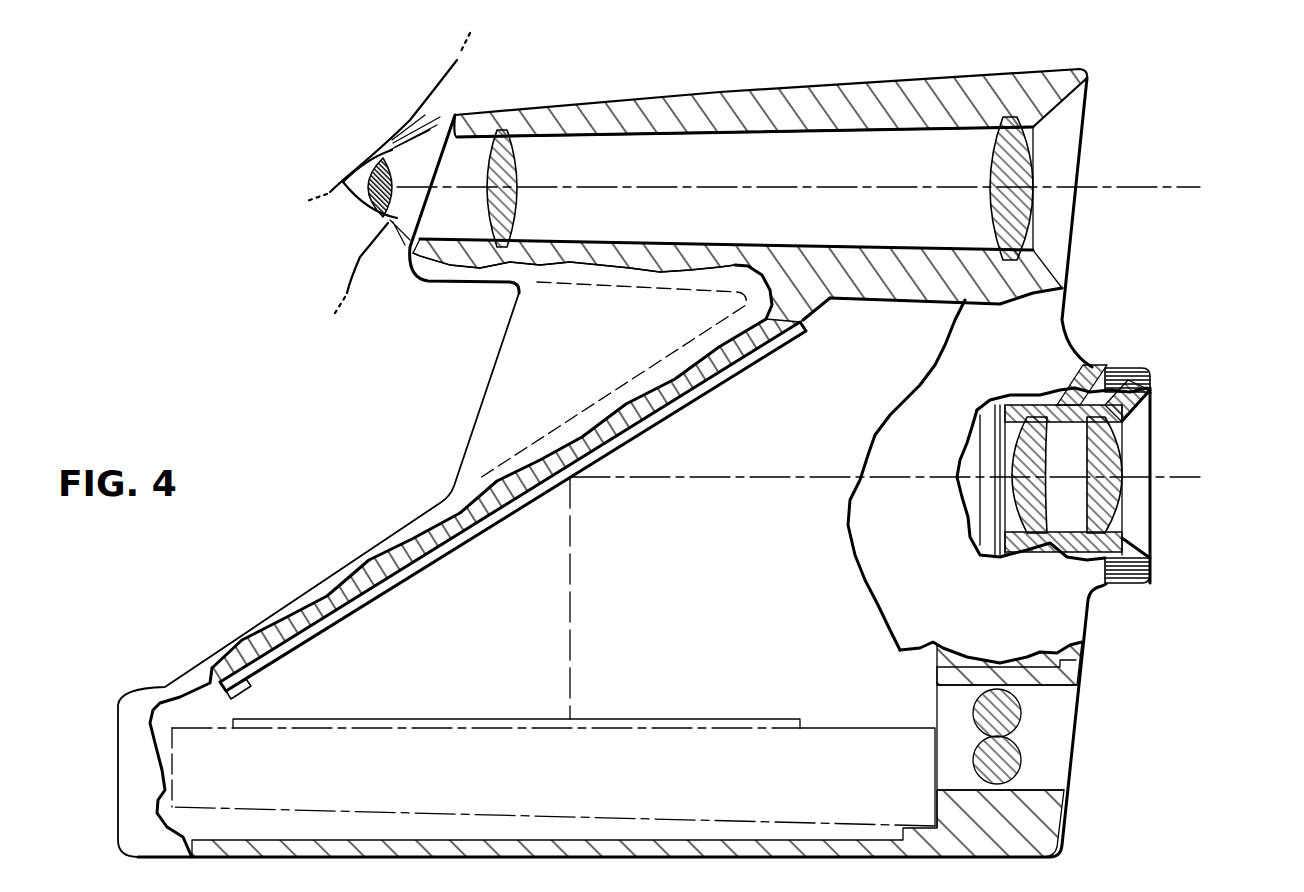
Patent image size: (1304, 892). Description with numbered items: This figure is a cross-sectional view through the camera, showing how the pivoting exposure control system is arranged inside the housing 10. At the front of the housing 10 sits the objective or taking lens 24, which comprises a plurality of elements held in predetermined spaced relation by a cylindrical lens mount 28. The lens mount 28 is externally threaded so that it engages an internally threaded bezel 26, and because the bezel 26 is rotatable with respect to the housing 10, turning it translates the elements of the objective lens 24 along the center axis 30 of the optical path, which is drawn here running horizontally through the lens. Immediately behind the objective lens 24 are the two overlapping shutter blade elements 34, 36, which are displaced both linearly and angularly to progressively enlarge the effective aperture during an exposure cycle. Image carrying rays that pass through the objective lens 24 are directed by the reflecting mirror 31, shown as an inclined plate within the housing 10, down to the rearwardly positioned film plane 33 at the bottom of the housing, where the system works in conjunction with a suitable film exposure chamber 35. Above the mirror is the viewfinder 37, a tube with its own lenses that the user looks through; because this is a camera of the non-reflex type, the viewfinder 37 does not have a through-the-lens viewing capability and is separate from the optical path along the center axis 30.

The housing 10 is at (1102, 100).
The viewfinder 37 is at (765, 92).
The reflecting mirror 31 is at (373, 592).
The film plane 33 is at (685, 727).
The film exposure chamber 35 is at (713, 559).
The center axis 30 is at (1195, 477).
The bezel 26 is at (1075, 390).
The lens mount 28 is at (1107, 370).
The shutter blade element 34 is at (997, 465).
The objective lens 24 is at (1125, 495).
The shutter blade element 36 is at (1022, 550).